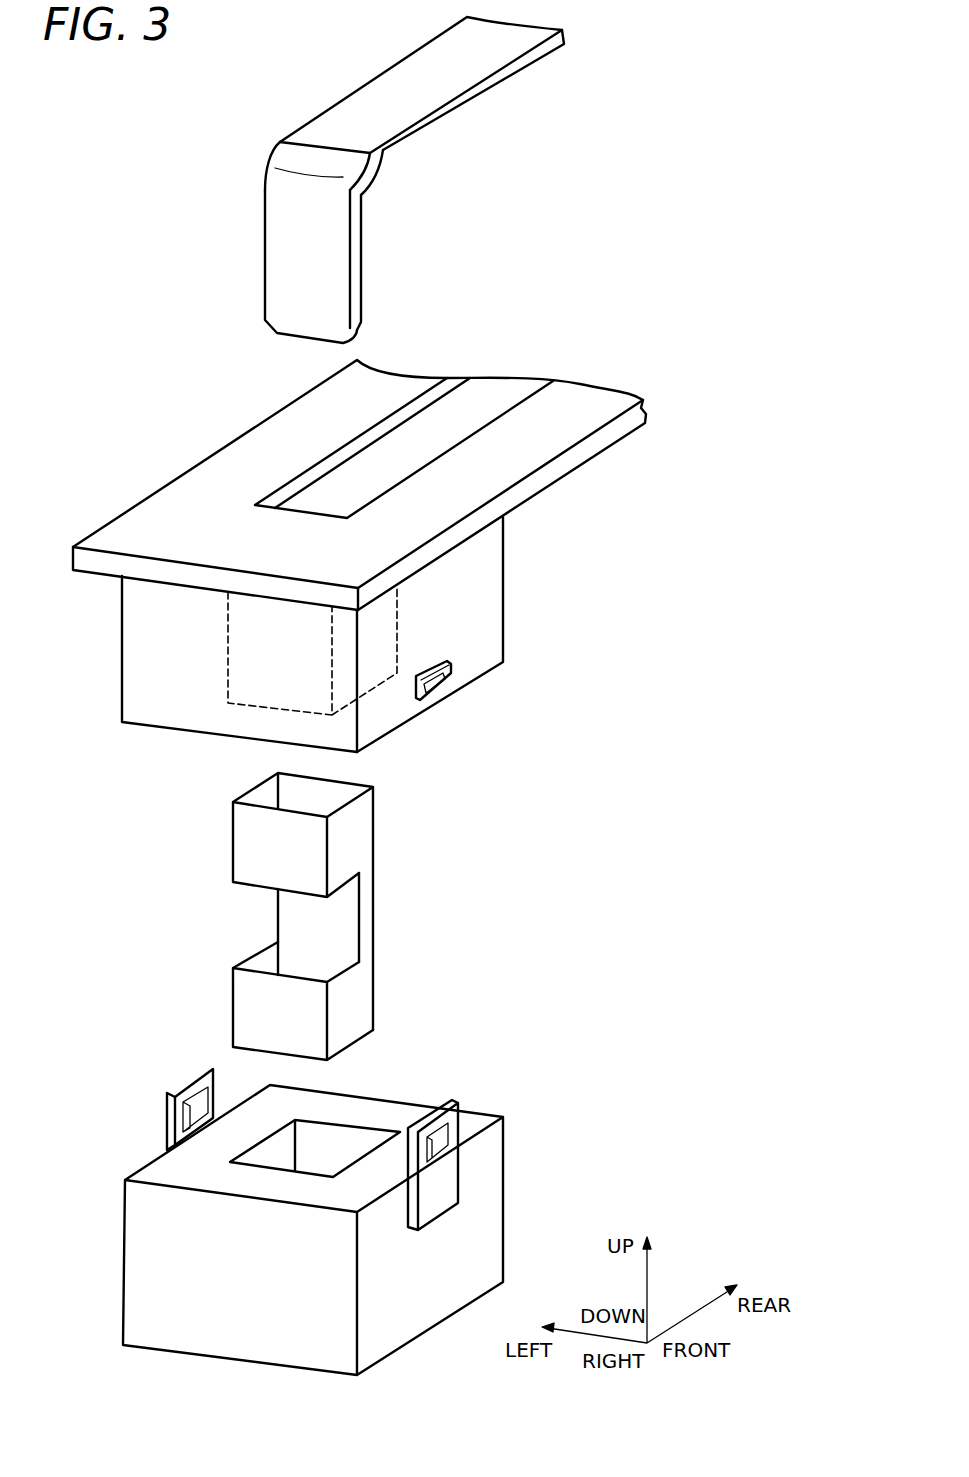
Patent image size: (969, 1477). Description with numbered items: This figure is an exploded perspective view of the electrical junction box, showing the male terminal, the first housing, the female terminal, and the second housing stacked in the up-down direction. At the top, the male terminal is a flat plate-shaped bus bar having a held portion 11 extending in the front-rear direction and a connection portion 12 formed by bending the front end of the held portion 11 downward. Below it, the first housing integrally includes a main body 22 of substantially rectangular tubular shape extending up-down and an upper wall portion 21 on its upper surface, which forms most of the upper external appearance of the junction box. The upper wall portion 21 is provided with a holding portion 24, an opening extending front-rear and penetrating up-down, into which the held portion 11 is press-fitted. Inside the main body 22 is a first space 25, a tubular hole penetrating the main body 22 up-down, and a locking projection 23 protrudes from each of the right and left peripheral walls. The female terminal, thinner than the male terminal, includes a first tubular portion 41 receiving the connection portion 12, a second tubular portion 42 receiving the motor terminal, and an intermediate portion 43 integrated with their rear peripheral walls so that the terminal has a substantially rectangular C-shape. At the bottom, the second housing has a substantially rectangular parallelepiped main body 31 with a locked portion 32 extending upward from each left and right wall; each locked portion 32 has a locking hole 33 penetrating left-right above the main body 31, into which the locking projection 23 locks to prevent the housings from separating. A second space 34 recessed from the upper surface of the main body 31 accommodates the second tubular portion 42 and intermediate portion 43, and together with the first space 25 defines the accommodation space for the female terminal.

The held portion 11 is at (420, 83).
The connection portion 12 is at (313, 250).
The upper wall portion 21 is at (493, 465).
The main body 22 is at (170, 636).
The locking projection 23 is at (440, 675).
The holding portion 24 is at (320, 468).
The first space 25 is at (228, 662).
The main body 31 is at (463, 1243).
The locked portion 32 is at (162, 1117).
The locking hole 33 is at (445, 1130).
The second space 34 is at (270, 1149).
The first tubular portion 41 is at (350, 838).
The second tubular portion 42 is at (350, 1005).
The intermediate portion 43 is at (317, 923).